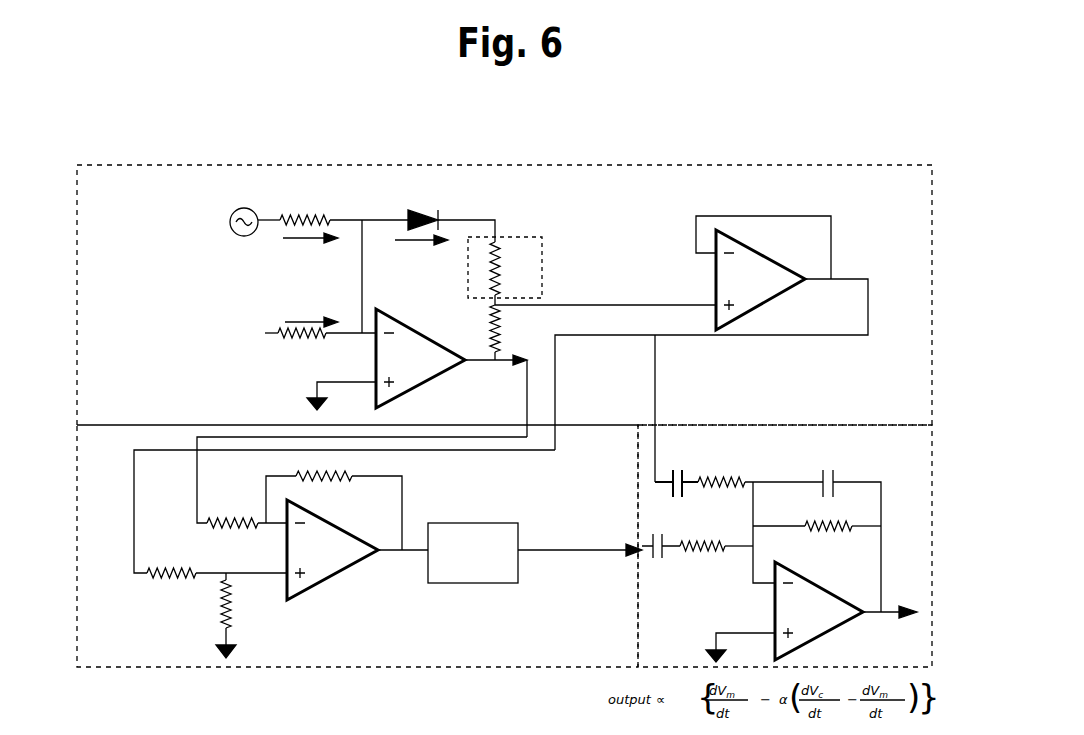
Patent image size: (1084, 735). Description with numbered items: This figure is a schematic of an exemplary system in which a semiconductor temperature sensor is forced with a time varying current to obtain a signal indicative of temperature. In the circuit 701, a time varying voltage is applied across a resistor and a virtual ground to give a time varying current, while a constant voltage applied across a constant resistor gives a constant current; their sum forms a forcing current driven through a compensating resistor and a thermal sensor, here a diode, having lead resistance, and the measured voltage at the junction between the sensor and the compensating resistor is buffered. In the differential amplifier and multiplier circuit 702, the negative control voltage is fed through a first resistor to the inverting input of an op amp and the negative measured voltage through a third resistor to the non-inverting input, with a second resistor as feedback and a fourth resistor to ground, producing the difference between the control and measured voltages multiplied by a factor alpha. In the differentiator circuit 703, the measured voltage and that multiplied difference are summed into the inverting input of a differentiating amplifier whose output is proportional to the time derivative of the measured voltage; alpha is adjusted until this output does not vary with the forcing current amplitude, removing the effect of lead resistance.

The circuit 701 is at (504, 323).
The differential amplifier and multiplier circuit 702 is at (359, 546).
The differentiator circuit 703 is at (785, 546).